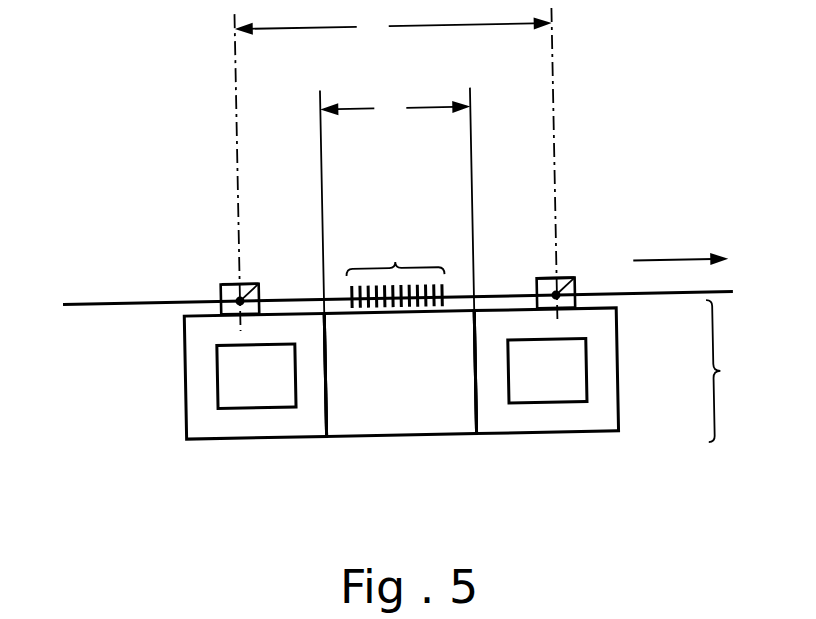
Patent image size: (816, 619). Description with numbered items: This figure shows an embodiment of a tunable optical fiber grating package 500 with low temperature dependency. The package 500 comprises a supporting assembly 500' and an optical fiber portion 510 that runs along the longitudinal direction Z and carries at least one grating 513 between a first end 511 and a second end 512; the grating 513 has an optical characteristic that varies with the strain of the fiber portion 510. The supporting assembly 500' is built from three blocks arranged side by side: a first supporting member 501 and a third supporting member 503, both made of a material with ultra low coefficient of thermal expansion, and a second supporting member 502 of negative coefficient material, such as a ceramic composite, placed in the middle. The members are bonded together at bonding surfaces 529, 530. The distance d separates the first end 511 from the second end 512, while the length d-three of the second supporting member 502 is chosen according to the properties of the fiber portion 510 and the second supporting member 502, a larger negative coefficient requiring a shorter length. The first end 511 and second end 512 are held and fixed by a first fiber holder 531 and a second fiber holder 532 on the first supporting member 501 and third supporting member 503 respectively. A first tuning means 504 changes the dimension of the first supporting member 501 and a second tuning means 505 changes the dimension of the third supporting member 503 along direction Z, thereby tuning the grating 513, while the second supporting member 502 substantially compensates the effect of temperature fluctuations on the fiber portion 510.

The tunable optical fiber grating package 500 is at (402, 268).
The supporting assembly 500' is at (747, 370).
The first supporting member 501 is at (207, 424).
The second supporting member 502 is at (390, 415).
The third supporting member 503 is at (539, 427).
The first tuning means 504 is at (250, 399).
The second tuning means 505 is at (568, 378).
The optical fiber portion 510 is at (493, 296).
The first end 511 is at (260, 282).
The second end 512 is at (578, 281).
The grating 513 is at (397, 262).
The bonding surface 529 is at (326, 331).
The bonding surface 530 is at (473, 411).
The first fiber holder 531 is at (222, 281).
The second fiber holder 532 is at (577, 281).